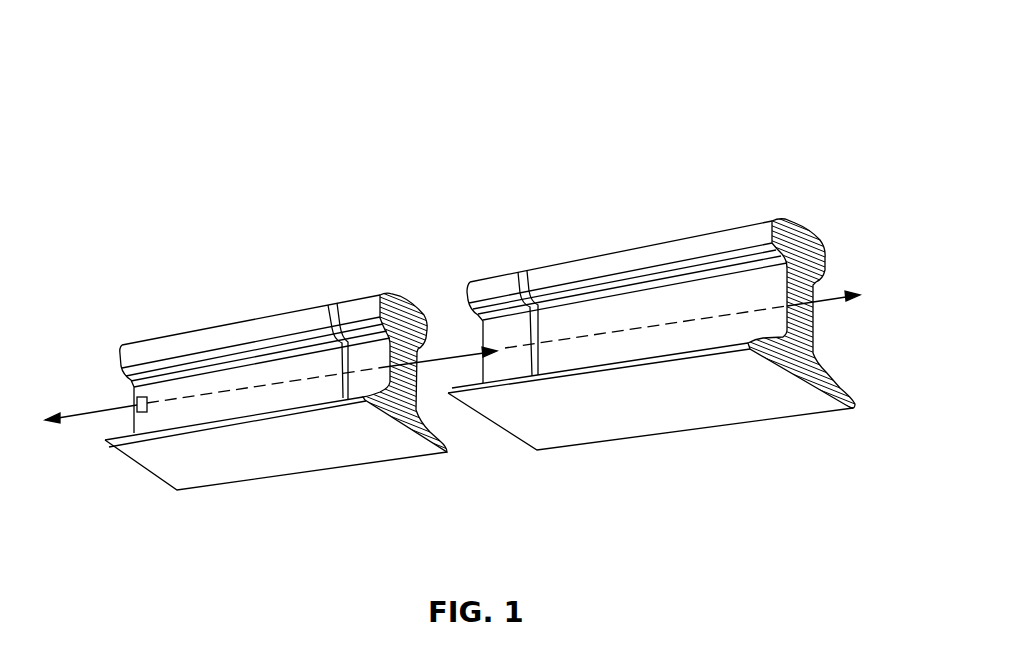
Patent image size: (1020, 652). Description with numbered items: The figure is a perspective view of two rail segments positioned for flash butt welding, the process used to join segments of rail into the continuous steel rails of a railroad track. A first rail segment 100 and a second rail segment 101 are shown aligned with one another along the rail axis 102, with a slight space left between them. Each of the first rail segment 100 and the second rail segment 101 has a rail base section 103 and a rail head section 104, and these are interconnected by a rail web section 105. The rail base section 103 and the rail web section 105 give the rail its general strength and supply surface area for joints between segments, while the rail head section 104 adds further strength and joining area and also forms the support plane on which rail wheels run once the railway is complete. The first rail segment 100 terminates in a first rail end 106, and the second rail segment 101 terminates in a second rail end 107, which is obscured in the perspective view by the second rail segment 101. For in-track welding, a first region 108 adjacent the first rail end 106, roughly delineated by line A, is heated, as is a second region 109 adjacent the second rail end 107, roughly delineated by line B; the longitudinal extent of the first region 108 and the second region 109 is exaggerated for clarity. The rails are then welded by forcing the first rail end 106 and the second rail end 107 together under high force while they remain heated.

The first rail segment 100 is at (277, 395).
The second rail segment 101 is at (654, 262).
The rail axis 102 is at (479, 352).
The rail base section 103 is at (660, 356).
The rail head section 104 is at (740, 237).
The rail web section 105 is at (697, 308).
The first rail end 106 is at (413, 308).
The second rail end 107 is at (468, 290).
The first region 108 is at (402, 444).
The second region 109 is at (532, 430).
The line A is at (350, 425).
The line B is at (523, 403).